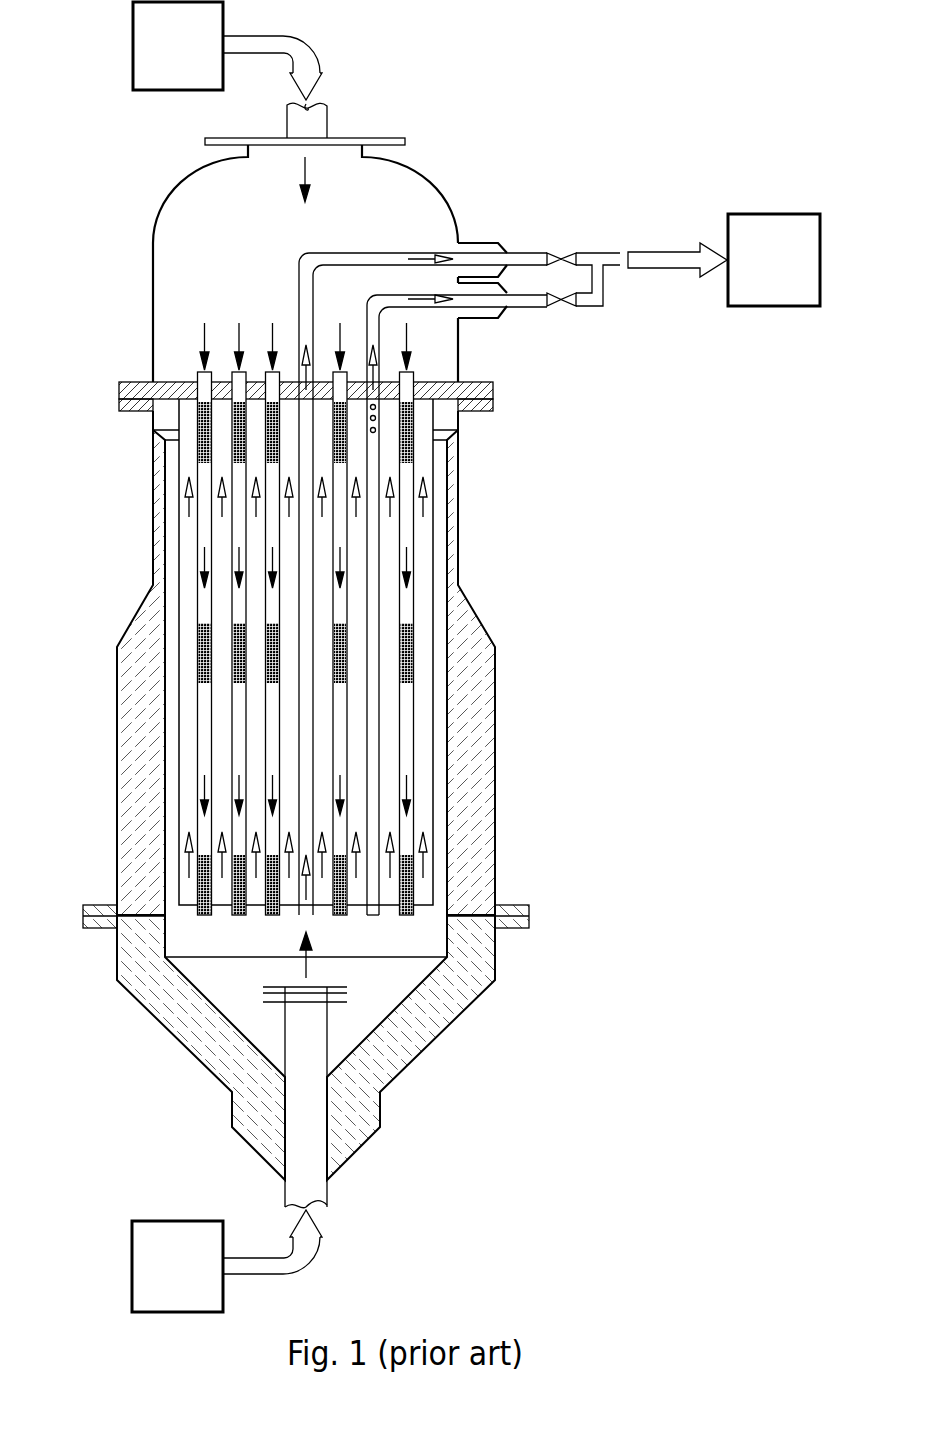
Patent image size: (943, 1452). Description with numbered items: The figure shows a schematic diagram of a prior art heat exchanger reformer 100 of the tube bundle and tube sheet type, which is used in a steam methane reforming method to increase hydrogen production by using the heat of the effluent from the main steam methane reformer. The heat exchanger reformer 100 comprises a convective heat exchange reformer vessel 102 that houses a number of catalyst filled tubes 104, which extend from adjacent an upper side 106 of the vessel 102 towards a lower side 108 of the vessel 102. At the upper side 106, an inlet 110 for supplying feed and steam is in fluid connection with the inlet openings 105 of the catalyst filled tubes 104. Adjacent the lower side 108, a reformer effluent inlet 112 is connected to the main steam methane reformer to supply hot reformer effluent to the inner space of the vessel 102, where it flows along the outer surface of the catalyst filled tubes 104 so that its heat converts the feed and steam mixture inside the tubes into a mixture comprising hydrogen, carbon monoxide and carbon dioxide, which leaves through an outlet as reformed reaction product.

The heat exchanger reformer 100 is at (550, 62).
The convective heat exchange reformer vessel 102 is at (117, 747).
The catalyst filled tubes 104 is at (203, 532).
The inlet openings 105 is at (272, 370).
The upper side 106 is at (458, 200).
The lower side 108 is at (457, 1058).
The inlet 110 is at (312, 97).
The reformer effluent inlet 112 is at (314, 1214).